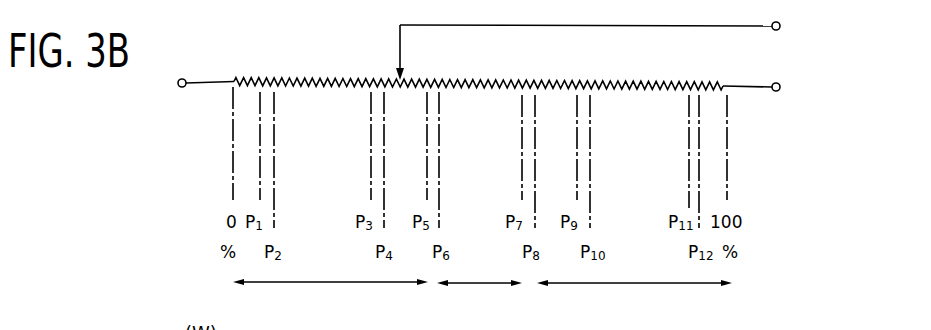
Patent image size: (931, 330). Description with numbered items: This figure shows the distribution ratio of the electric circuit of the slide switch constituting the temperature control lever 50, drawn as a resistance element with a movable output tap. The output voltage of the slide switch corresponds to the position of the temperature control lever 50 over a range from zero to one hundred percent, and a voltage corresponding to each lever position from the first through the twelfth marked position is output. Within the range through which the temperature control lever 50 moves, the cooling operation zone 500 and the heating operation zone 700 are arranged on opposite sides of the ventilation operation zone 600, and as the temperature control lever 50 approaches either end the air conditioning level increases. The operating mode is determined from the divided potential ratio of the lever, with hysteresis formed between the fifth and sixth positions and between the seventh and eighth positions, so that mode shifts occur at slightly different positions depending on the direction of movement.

The temperature control lever 50 is at (627, 47).
The cooling operation zone 500 is at (330, 298).
The ventilation operation zone 600 is at (479, 299).
The heating operation zone 700 is at (634, 299).